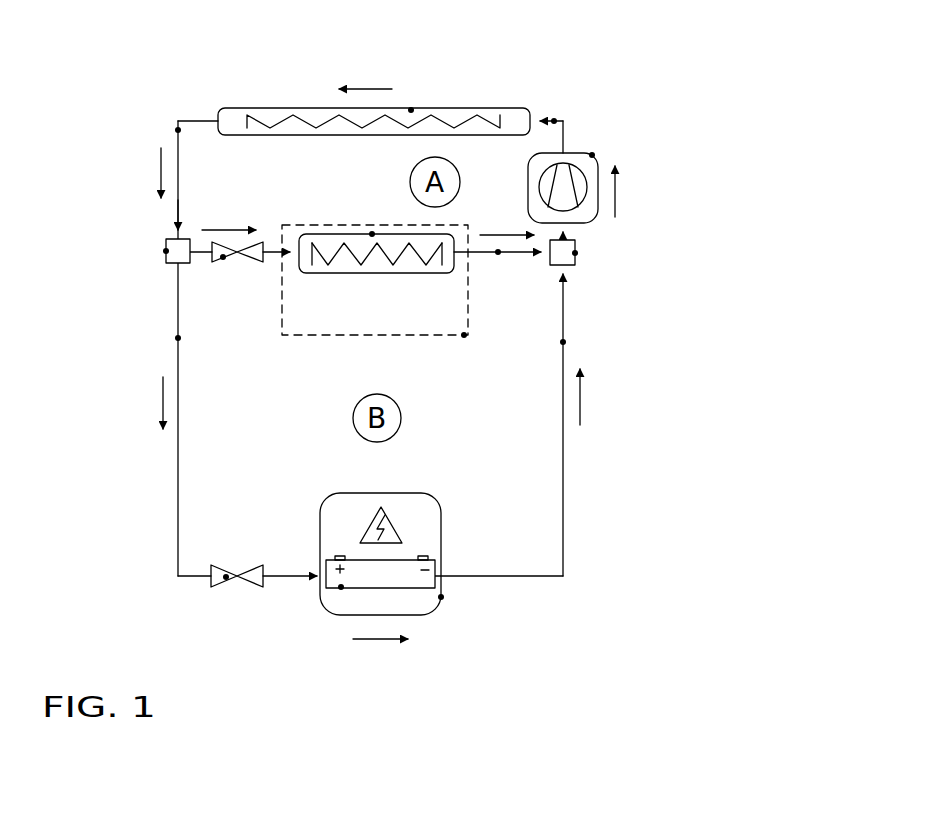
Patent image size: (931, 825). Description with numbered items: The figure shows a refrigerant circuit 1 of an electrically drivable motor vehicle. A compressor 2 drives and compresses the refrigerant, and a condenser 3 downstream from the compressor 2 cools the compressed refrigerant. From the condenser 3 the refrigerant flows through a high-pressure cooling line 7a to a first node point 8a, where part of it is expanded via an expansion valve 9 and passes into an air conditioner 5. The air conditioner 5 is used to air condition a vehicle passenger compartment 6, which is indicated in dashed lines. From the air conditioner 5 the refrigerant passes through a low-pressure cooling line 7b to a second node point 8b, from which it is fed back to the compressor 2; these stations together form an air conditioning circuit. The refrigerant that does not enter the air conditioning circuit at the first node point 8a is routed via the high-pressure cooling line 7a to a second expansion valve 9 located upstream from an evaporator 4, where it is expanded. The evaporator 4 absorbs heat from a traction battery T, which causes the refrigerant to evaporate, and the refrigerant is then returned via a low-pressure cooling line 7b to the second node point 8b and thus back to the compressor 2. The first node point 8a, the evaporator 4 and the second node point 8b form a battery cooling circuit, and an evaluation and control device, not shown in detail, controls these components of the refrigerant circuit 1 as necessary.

The refrigerant circuit 1 is at (714, 96).
The compressor 2 is at (592, 155).
The condenser 3 is at (411, 110).
The evaporator 4 is at (441, 597).
The air conditioner 5 is at (372, 234).
The vehicle passenger compartment 6 is at (464, 335).
The high-pressure cooling line 7a is at (178, 130).
The low-pressure cooling line 7b is at (498, 252).
The first node point 8a is at (166, 251).
The second node point 8b is at (575, 253).
The expansion valve 9 is at (223, 257).
The traction battery T is at (341, 587).